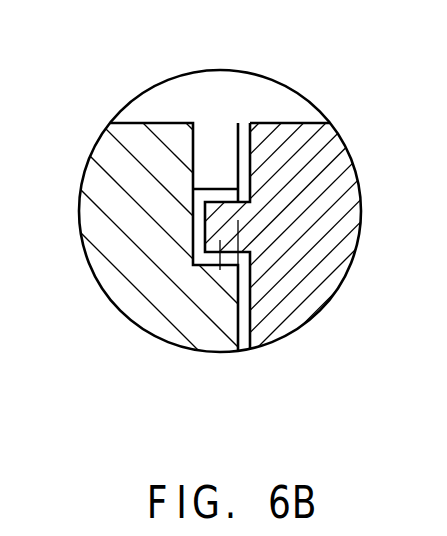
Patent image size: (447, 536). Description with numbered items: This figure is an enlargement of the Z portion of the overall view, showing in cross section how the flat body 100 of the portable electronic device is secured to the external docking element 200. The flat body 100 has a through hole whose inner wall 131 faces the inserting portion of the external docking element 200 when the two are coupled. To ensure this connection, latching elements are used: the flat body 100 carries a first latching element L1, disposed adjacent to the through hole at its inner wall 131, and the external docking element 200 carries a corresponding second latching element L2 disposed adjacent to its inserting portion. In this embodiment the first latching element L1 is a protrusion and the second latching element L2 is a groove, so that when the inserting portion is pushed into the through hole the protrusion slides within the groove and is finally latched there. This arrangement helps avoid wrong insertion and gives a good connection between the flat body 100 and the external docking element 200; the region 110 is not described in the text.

The flat body 100 is at (327, 268).
The first body portion 110 is at (234, 228).
The inner wall 131 is at (244, 143).
The external docking element 200 is at (112, 267).
The first latching element L1 is at (220, 270).
The second latching element L2 is at (213, 128).
The Z portion Z is at (133, 102).